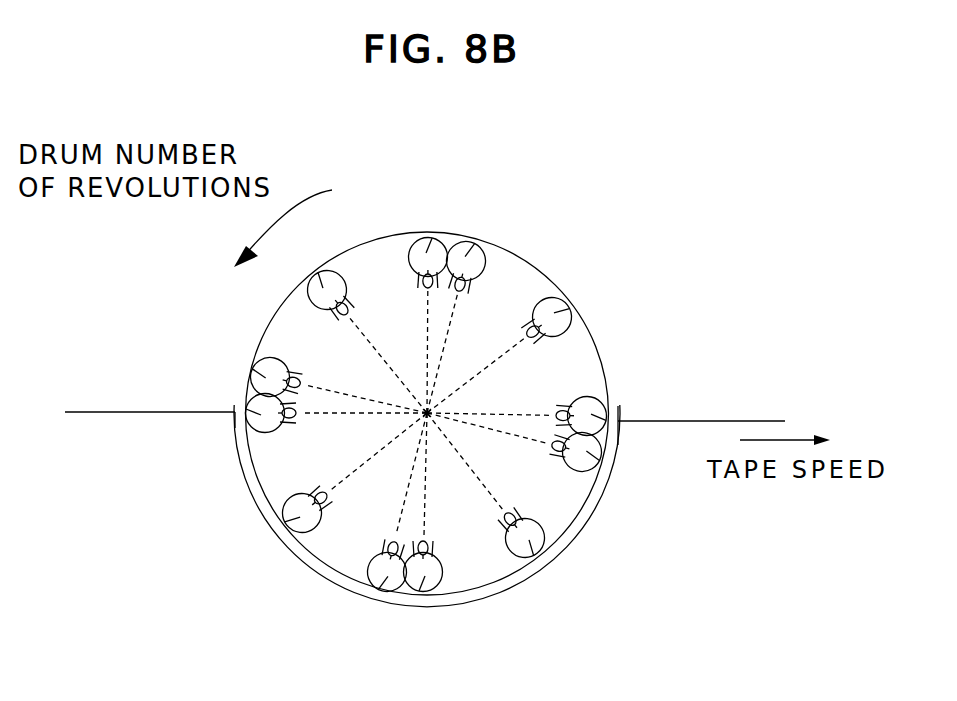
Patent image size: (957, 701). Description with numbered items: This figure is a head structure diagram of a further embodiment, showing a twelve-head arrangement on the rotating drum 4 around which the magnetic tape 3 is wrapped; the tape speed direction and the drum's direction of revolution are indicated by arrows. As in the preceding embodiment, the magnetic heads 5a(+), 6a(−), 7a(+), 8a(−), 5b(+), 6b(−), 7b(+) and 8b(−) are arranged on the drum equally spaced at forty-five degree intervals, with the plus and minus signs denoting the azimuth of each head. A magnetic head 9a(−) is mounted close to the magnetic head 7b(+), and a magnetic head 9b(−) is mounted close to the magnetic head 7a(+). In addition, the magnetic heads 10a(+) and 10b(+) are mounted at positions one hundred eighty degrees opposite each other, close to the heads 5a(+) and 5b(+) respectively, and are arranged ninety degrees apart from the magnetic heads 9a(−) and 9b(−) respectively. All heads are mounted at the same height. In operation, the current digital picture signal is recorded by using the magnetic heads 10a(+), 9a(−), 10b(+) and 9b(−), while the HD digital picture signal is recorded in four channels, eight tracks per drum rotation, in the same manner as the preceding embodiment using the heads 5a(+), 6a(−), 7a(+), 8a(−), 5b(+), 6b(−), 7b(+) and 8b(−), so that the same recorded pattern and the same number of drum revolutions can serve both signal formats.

The magnetic tape 3 is at (753, 420).
The rotating drum 4 is at (273, 460).
The magnetic head 5a(+) 5a is at (246, 418).
The magnetic head 5b(+) 5b is at (604, 403).
The magnetic head 6a(−) 6a is at (285, 530).
The magnetic head 6b(−) 6b is at (558, 302).
The magnetic head 7a(+) 7a is at (438, 591).
The magnetic head 7b(+) 7b is at (428, 237).
The magnetic head 8a(−) 8a is at (541, 553).
The magnetic head 8b(−) 8b is at (310, 284).
The magnetic head 9a(−) 9a is at (466, 241).
The magnetic head 9b(−) 9b is at (382, 591).
The magnetic head 10a(+) 10a is at (251, 373).
The magnetic head 10b(+) 10b is at (600, 468).